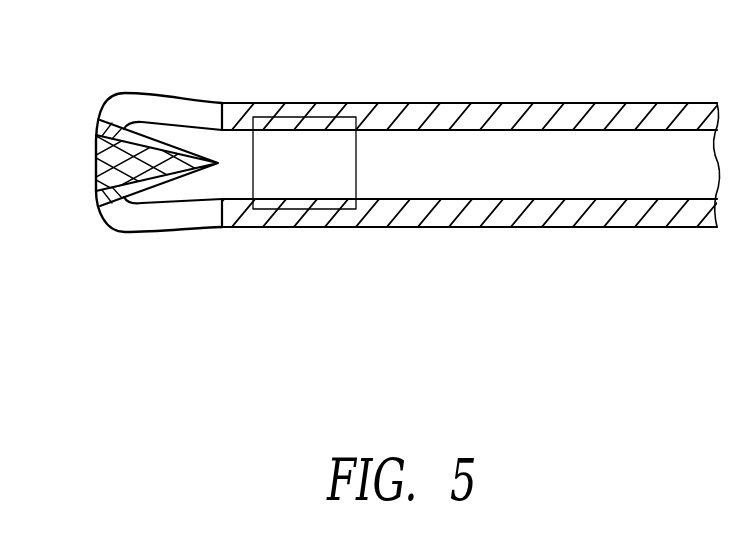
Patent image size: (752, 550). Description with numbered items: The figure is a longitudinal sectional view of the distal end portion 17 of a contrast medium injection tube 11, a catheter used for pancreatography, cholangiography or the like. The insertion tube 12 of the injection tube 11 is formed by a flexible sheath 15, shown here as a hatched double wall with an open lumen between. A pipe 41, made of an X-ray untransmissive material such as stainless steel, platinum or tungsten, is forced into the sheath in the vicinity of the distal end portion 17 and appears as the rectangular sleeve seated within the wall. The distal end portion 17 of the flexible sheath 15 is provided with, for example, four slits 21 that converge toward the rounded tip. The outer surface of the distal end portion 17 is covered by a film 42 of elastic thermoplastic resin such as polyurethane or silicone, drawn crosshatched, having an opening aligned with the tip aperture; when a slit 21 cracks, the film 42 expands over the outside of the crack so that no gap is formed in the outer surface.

The contrast medium injection tube 11 is at (470, 72).
The insertion tube 12 is at (604, 96).
The flexible sheath 15 is at (470, 220).
The distal end portion 17 is at (117, 92).
The slits 21 is at (167, 110).
The pipe 41 is at (293, 113).
The film 42 is at (110, 173).